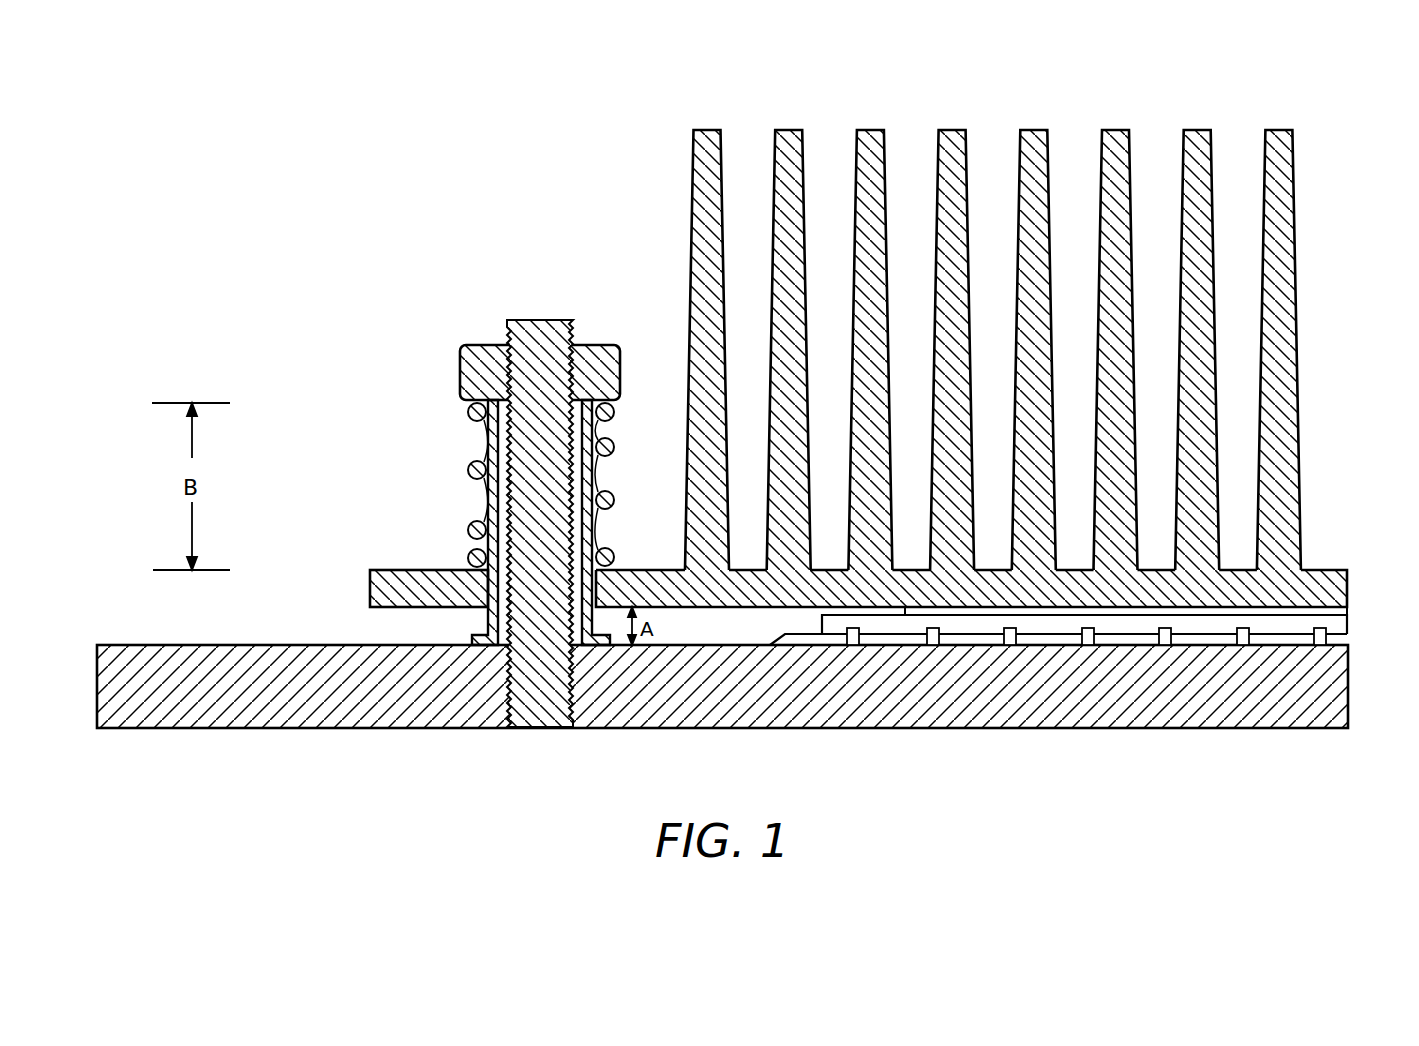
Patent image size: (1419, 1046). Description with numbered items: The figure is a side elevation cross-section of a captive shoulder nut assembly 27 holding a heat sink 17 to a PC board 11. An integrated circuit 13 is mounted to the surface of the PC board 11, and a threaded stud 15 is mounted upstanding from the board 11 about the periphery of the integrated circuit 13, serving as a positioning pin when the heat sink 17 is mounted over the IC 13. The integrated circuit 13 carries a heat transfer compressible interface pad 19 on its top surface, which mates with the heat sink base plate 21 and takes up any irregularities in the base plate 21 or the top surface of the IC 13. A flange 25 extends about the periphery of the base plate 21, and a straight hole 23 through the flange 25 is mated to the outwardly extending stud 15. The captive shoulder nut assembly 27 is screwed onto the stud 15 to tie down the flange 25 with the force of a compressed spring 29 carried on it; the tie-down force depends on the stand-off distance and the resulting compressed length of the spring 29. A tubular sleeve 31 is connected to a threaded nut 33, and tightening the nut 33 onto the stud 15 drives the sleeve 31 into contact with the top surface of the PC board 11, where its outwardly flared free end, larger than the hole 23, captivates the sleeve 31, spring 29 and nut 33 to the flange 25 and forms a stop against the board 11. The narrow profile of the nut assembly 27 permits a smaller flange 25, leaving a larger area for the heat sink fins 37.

The PC board 11 is at (1350, 710).
The integrated circuit 13 is at (1348, 626).
The threaded stud 15 is at (525, 708).
The heat sink 17 is at (1005, 328).
The heat transfer compressible interface pad 19 is at (1280, 612).
The heat sink base plate 21 is at (742, 585).
The straight hole 23 is at (476, 580).
The flange 25 is at (400, 568).
The captive shoulder nut assembly 27 is at (474, 312).
The spring 29 is at (468, 470).
The tubular sleeve 31 is at (608, 493).
The threaded nut 33 is at (590, 347).
The heat sink fins 37 is at (802, 157).